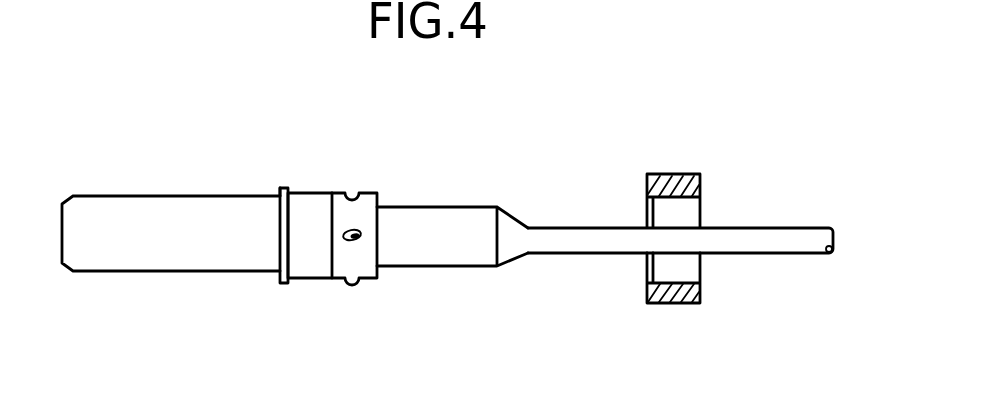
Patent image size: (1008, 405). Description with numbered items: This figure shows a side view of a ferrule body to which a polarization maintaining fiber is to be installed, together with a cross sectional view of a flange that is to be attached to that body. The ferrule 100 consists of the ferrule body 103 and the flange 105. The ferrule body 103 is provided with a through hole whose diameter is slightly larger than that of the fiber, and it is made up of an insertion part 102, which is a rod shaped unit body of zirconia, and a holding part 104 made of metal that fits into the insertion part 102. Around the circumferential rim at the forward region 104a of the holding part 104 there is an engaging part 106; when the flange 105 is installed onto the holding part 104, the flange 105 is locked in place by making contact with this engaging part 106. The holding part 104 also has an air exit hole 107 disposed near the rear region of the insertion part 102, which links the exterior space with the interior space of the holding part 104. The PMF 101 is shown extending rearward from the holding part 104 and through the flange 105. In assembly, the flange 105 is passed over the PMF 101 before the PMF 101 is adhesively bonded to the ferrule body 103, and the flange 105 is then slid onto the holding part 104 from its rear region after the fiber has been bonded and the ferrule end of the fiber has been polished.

The ferrule 100 is at (182, 179).
The PMF 101 is at (773, 229).
The insertion part 102 is at (217, 270).
The ferrule body 103 is at (240, 191).
The holding part 104 is at (378, 198).
The forward region of the holding part 104a is at (280, 190).
The flange 105 is at (647, 201).
The engaging part 106 is at (284, 188).
The air hole 107 is at (362, 238).